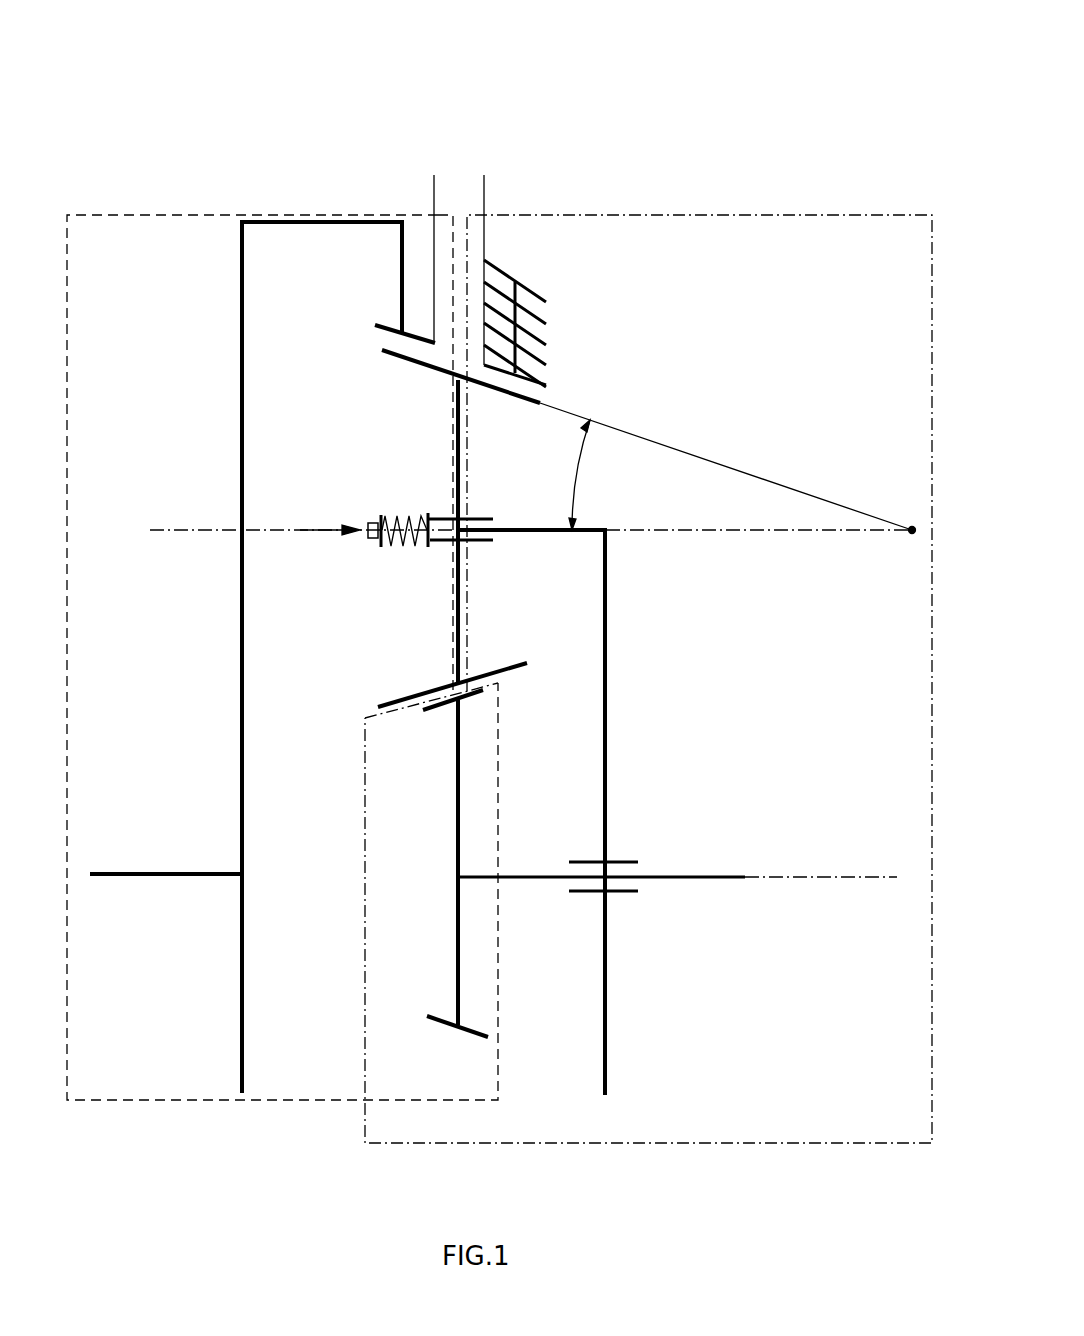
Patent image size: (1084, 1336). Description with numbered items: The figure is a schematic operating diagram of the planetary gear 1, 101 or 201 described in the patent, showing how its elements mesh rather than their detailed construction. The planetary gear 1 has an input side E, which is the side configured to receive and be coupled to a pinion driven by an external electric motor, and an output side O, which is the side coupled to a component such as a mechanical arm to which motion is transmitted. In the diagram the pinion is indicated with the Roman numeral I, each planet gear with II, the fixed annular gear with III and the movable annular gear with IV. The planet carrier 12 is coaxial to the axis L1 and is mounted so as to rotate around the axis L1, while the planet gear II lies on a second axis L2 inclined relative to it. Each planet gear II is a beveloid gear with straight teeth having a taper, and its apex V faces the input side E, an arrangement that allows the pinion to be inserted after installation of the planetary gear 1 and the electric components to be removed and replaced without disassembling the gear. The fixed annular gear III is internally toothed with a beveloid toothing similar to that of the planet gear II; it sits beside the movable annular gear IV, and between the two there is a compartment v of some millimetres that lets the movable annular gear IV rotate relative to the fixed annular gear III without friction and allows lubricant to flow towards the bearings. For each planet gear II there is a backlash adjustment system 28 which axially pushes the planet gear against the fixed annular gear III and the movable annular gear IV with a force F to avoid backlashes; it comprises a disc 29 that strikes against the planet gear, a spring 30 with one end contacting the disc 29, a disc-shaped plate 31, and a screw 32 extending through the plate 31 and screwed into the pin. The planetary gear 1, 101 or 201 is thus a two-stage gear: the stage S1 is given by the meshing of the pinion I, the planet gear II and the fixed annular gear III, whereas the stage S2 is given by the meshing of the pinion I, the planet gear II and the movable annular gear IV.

The planetary gear 1 is at (499, 571).
The planetary gear 101 is at (499, 571).
The planetary gear 201 is at (499, 571).
The planet carrier 12 is at (606, 667).
The backlash adjustment system 28 is at (394, 553).
The disc 29 is at (429, 547).
The spring 30 is at (396, 516).
The disc-shaped plate 31 is at (380, 519).
The screw 32 is at (375, 542).
The first stage S1 is at (748, 216).
The second stage S2 is at (164, 216).
The axis L1 is at (827, 877).
The second axis L2 is at (205, 528).
The output side O is at (158, 775).
The input side E is at (693, 790).
The apex V is at (910, 515).
The force F is at (330, 516).
The compartment v is at (484, 199).
The pinion I is at (458, 815).
The planet gear II is at (455, 447).
The fixed annular gear III is at (517, 302).
The movable annular gear IV is at (400, 307).